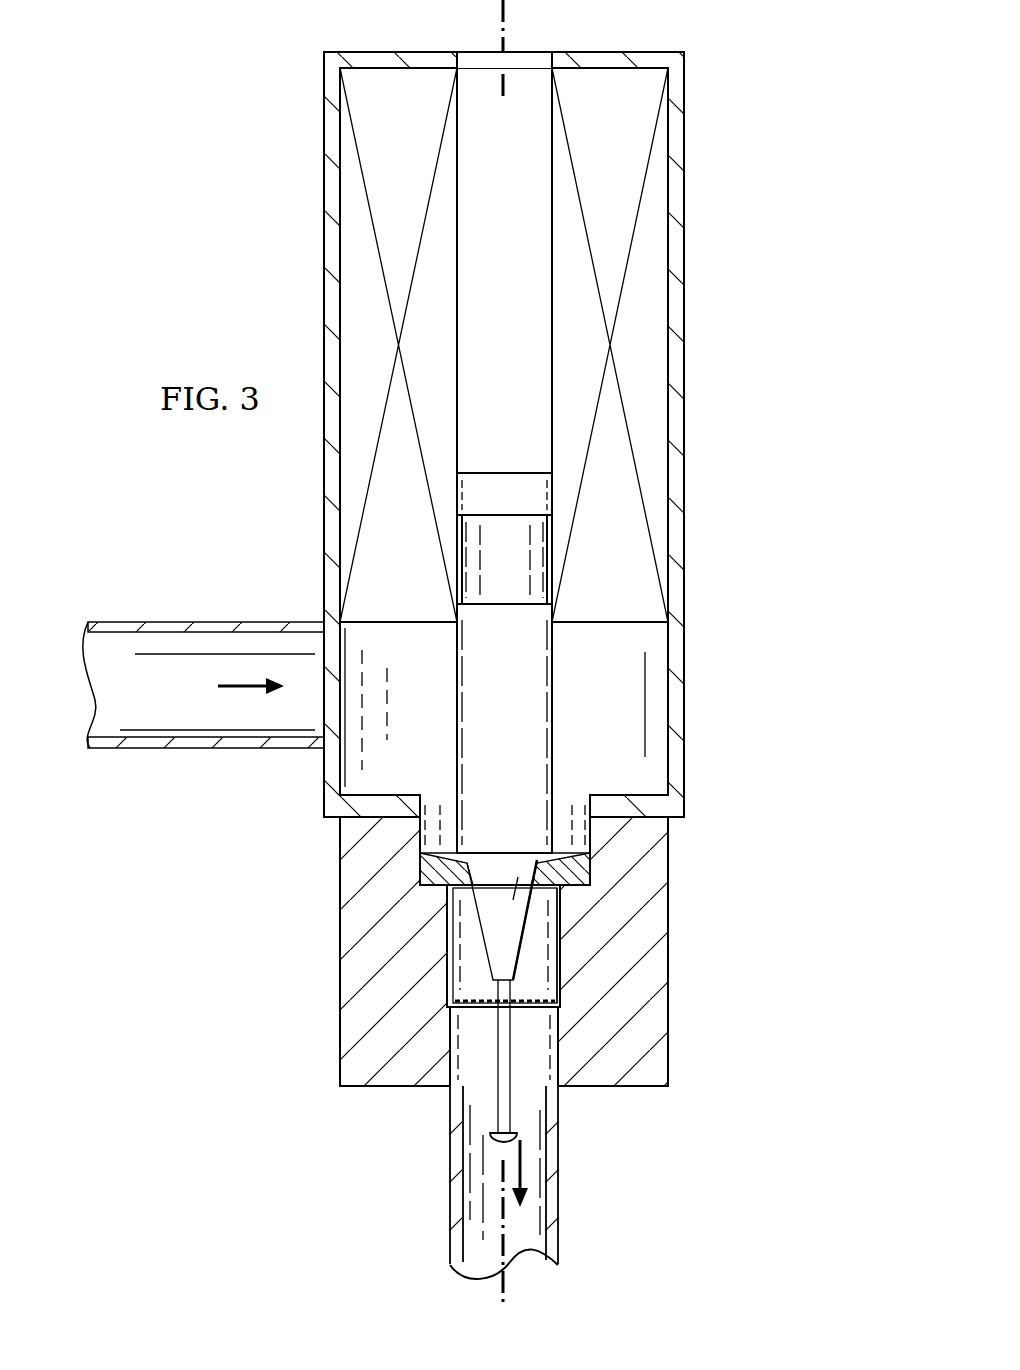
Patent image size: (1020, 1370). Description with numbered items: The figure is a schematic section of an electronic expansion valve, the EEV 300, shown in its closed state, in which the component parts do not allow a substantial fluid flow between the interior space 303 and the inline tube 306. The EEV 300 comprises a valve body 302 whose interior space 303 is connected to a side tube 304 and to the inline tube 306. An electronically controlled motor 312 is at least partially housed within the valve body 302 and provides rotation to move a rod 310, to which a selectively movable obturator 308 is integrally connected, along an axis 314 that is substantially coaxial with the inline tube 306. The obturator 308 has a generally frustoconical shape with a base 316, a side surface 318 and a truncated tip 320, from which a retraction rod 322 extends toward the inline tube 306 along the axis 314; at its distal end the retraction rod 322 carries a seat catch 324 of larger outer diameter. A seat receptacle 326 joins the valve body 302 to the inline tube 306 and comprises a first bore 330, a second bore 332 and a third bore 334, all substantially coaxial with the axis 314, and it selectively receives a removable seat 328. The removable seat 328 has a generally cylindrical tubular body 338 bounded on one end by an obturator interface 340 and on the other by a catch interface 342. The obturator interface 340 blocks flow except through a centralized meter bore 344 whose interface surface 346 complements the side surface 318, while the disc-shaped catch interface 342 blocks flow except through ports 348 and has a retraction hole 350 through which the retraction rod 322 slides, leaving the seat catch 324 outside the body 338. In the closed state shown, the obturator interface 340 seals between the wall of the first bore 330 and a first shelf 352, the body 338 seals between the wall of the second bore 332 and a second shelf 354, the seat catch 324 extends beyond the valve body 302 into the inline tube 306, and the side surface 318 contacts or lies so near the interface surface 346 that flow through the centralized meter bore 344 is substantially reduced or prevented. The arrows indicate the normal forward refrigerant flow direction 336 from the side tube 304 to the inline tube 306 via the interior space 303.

The EEV 300 is at (232, 268).
The valve body 302 is at (684, 340).
The interior space 303 is at (657, 730).
The side tube 304 is at (213, 622).
The inline tube 306 is at (558, 1218).
The obturator 308 is at (500, 889).
The rod 310 is at (560, 695).
The electronically controlled motor 312 is at (620, 77).
The axis 314 is at (505, 1283).
The base 316 is at (577, 858).
The side surface 318 is at (462, 915).
The truncated tip 320 is at (560, 965).
The retraction rod 322 is at (510, 1107).
The seat catch 324 is at (497, 1147).
The seat receptacle 326 is at (674, 890).
The removable seat 328 is at (505, 957).
The first bore 330 is at (590, 828).
The second bore 332 is at (562, 935).
The third bore 334 is at (560, 1050).
The forward refrigerant flow direction 336 is at (218, 686).
The tubular body 338 is at (445, 953).
The obturator interface 340 is at (507, 807).
The catch interface 342 is at (452, 1007).
The centralized meter bore 344 is at (412, 787).
The interface surface 346 is at (432, 825).
The ports 348 is at (465, 1000).
The retraction hole 350 is at (512, 1008).
The first shelf 352 is at (565, 893).
The second shelf 354 is at (447, 1013).